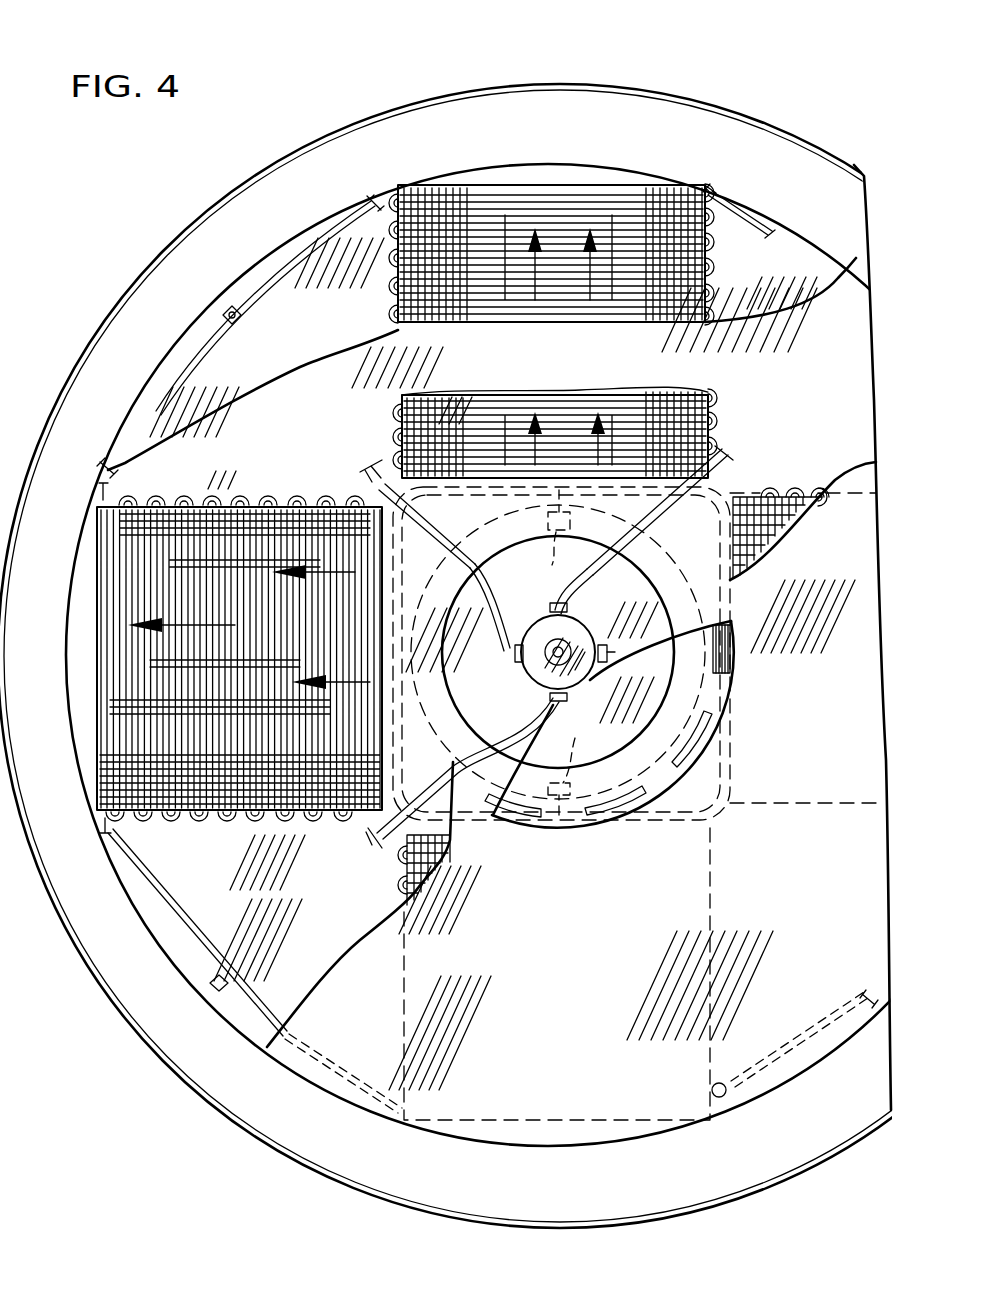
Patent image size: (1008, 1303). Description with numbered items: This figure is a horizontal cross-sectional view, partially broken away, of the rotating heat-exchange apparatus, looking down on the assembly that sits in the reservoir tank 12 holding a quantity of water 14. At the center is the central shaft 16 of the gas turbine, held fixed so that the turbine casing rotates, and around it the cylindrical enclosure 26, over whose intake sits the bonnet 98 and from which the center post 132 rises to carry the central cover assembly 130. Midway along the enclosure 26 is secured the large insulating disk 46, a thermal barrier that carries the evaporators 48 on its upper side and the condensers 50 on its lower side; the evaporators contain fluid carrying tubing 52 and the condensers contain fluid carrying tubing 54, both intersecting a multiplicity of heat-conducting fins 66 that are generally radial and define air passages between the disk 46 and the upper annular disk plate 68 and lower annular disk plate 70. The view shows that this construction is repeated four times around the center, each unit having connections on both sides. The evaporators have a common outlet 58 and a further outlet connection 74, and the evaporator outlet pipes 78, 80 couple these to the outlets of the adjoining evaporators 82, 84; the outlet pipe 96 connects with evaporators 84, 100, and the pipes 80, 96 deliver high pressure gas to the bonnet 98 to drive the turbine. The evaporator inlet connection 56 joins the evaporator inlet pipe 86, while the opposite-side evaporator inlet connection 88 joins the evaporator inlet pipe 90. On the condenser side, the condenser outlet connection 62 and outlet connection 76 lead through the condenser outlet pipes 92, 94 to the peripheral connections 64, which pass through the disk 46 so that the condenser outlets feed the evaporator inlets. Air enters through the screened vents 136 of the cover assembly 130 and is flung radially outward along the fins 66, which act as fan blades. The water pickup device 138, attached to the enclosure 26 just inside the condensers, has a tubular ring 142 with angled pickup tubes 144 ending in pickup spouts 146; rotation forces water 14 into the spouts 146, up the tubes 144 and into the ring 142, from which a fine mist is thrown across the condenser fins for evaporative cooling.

The reservoir tank 12 is at (135, 265).
The water 14 is at (105, 372).
The central shaft 16 is at (522, 692).
The cylindrical enclosure 26 is at (471, 573).
The disk 46 is at (836, 350).
The evaporators 48 is at (594, 414).
The condensers 50 is at (491, 224).
The fluid carrying tubing 52 is at (625, 412).
The fluid carrying tubing 54 is at (577, 198).
The evaporator inlet connection 56 is at (103, 832).
The common outlet 58 is at (368, 466).
The condenser outlet connection 62 is at (375, 200).
The peripheral connection 64 is at (226, 312).
The fins 66 is at (215, 500).
The upper annular disk plate 68 is at (851, 567).
The lower annular disk plate 70 is at (252, 375).
The outlet connection 74 is at (735, 470).
The outlet connection 76 is at (712, 188).
The evaporator outlet pipe 78 is at (684, 524).
The evaporator outlet pipe 80 is at (452, 560).
The adjoining evaporator 82 is at (815, 489).
The adjoining evaporator 84 is at (282, 480).
The evaporator inlet pipe 86 is at (148, 887).
The evaporator inlet connection 88 is at (100, 494).
The evaporator inlet pipe 90 is at (105, 468).
The condenser outlet pipe 92 is at (288, 260).
The condenser outlet pipe 94 is at (762, 228).
The outlet pipe 96 is at (452, 750).
The bonnet 98 is at (592, 618).
The evaporator 100 is at (388, 893).
The central cover assembly 130 is at (730, 775).
The center post 132 is at (553, 644).
The vents 136 is at (737, 720).
The water pickup device 138 is at (722, 818).
The tubular ring 142 is at (652, 832).
The pickup tubes 144 is at (530, 530).
The pickup spout 146 is at (551, 555).